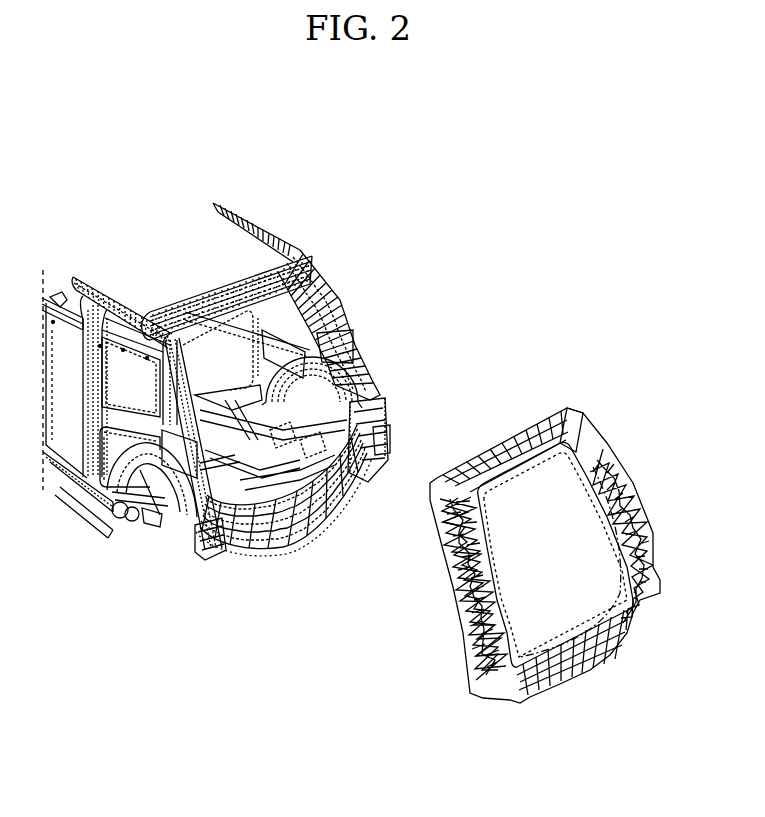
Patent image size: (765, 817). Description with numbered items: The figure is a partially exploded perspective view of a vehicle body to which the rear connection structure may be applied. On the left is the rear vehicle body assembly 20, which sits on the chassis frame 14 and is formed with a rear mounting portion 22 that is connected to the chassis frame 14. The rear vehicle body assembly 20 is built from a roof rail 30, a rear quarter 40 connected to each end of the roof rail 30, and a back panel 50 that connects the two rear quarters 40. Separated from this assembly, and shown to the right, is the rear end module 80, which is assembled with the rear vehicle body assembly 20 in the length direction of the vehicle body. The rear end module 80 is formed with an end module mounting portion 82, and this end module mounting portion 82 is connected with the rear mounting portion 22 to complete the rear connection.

The chassis frame 14 is at (136, 543).
The rear vehicle body assembly 20 is at (259, 419).
The rear mounting portion 22 is at (378, 488).
The roof rail 30 is at (209, 281).
The rear quarter 40 is at (355, 303).
The back panel 50 is at (297, 557).
The rear end module 80 is at (566, 594).
The end module mounting portion 82 is at (655, 623).